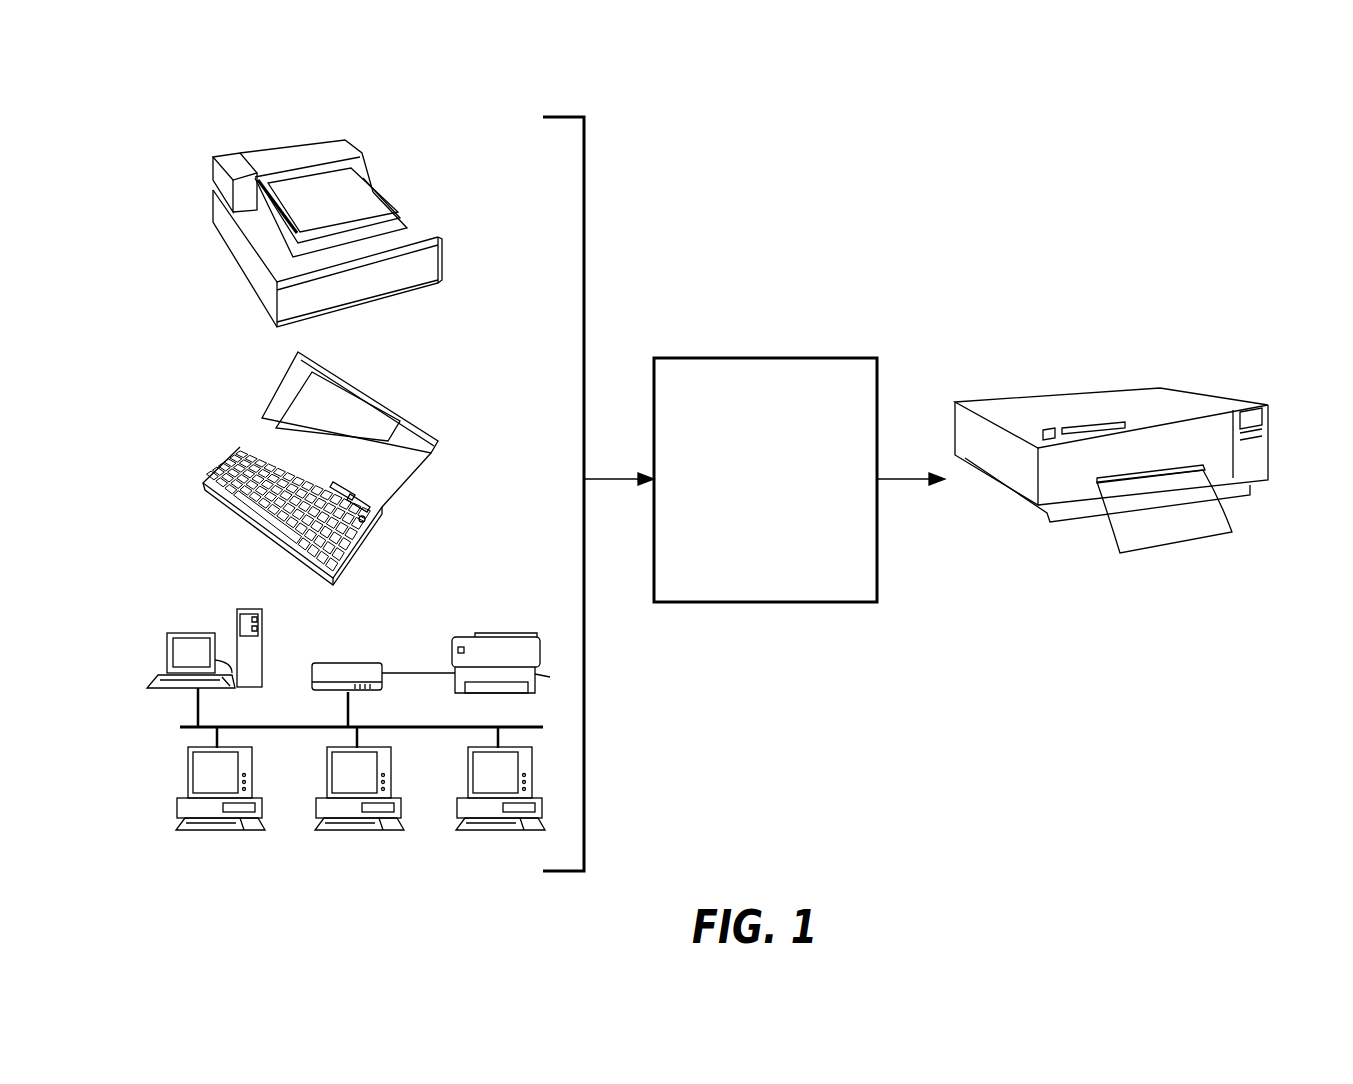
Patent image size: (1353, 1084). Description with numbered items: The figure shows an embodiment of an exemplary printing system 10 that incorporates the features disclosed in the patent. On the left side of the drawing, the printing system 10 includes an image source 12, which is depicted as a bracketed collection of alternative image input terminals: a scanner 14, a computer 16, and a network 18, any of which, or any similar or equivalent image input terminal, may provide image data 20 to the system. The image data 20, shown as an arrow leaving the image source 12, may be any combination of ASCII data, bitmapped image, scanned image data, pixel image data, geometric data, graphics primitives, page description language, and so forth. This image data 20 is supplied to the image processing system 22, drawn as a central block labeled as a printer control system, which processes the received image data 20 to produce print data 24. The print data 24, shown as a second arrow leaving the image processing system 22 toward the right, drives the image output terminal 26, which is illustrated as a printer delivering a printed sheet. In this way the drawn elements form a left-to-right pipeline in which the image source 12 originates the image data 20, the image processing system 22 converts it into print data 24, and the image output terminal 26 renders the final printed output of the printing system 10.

The printing system 10 is at (828, 198).
The image source 12 is at (425, 480).
The scanner 14 is at (403, 297).
The computer 16 is at (400, 408).
The network 18 is at (344, 851).
The image data 20 is at (610, 478).
The image processing system 22 is at (755, 603).
The print data 24 is at (911, 478).
The image output terminal 26 is at (1073, 518).